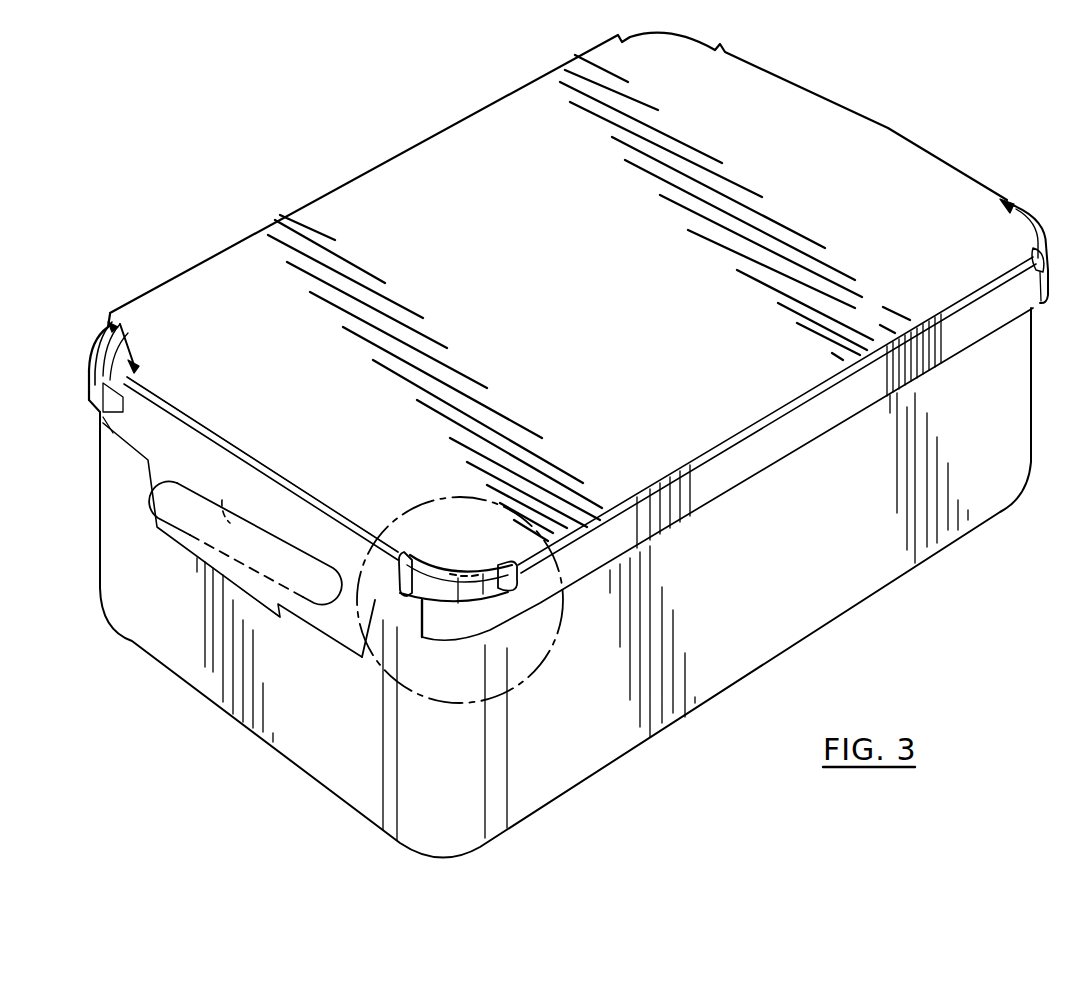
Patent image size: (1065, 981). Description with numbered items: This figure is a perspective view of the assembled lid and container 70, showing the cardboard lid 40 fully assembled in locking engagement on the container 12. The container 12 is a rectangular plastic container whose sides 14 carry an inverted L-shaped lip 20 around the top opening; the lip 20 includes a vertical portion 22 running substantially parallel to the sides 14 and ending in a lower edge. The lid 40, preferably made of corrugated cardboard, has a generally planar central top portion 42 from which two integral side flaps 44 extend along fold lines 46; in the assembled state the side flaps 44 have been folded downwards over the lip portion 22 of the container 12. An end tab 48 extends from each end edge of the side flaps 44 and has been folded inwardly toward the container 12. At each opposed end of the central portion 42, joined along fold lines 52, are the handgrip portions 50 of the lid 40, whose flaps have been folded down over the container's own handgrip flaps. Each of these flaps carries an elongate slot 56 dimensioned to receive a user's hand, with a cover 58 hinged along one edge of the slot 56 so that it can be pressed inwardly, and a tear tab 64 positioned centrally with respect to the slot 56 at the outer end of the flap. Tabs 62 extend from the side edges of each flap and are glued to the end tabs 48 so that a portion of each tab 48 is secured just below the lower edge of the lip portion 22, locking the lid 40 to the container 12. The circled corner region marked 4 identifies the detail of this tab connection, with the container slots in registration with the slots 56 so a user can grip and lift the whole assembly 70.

The detail circle (FIG. 4 region) 4 is at (558, 630).
The container 12 is at (875, 592).
The sides 14 is at (250, 654).
The lip 20 is at (430, 567).
The portion 22 is at (483, 577).
The lid 40 is at (889, 121).
The central top portion 42 is at (584, 289).
The side flaps 44 is at (951, 344).
The fold lines 46 is at (366, 172).
The end tab 48 is at (93, 400).
The handgrip portions 50 is at (196, 546).
The fold lines 52 is at (290, 483).
The elongate slots 56 is at (222, 505).
The cover 58 is at (249, 559).
The tabs 62 is at (113, 424).
The tear tab 64 is at (238, 588).
The assembled lid and container 70 is at (417, 124).